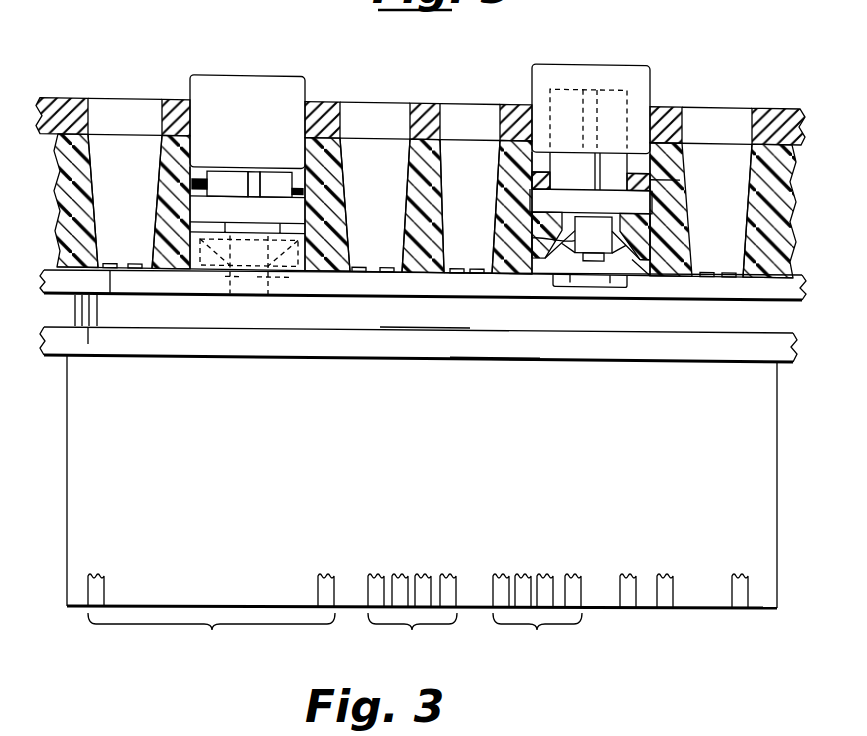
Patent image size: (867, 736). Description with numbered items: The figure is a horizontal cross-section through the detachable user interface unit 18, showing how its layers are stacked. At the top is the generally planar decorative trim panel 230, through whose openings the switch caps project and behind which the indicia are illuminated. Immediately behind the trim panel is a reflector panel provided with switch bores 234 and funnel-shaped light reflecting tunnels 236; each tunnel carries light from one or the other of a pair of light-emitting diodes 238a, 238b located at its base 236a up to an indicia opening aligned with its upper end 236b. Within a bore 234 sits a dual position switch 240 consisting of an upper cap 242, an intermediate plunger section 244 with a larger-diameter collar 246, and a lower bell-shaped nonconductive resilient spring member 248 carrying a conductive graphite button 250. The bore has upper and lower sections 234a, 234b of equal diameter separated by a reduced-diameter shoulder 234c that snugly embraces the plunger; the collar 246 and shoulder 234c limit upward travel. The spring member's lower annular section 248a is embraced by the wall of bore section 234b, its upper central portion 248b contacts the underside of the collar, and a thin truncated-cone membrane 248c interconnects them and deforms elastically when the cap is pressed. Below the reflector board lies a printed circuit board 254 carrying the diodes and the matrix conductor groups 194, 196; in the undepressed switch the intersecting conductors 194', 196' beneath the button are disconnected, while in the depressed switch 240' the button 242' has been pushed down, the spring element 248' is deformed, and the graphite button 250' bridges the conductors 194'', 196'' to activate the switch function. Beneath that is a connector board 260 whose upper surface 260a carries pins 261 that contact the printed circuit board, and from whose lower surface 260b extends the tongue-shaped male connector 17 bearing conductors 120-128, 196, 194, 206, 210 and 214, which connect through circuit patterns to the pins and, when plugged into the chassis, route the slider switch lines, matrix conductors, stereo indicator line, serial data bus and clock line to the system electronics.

The pluggable male connector 17 is at (447, 446).
The detachable user interface unit 18 is at (774, 88).
The slider switch output lines 120-128 is at (211, 618).
The matrix conductors 194 is at (537, 632).
The conductor group 194' is at (553, 339).
The conductor group 194'' is at (194, 326).
The matrix conductors 196 is at (420, 623).
The conductor group 196' is at (640, 340).
The conductor group 196'' is at (304, 332).
The stereo indicator line 206 is at (630, 612).
The serial data bus 210 is at (667, 612).
The clock line 214 is at (742, 612).
The decorative trim panel 230 is at (53, 96).
The switch bore 234 is at (337, 185).
The upper bore section 234a is at (663, 160).
The lower bore section 234b is at (642, 225).
The shoulder 234c is at (637, 181).
The light reflecting tunnel 236 is at (118, 175).
The tunnel base 236a is at (493, 277).
The tunnel upper end 236b is at (462, 140).
The light-emitting diode 238a is at (118, 299).
The light-emitting diode 238b is at (135, 255).
The dual position switch 240 is at (614, 141).
The dual position switch 240' is at (250, 146).
The upper cap 242 is at (591, 92).
The button 242' is at (247, 88).
The plunger section 244 is at (608, 165).
The collar 246 is at (580, 199).
The bell-shaped resilient spring member 248 is at (637, 237).
The spring element 248' is at (296, 226).
The lower annular section 248a is at (647, 269).
The upper central portion 248b is at (590, 203).
The elastically deformable membrane 248c is at (660, 269).
The conductive graphite button 250 is at (518, 242).
The graphite button 250' is at (249, 206).
The printed circuit board 254 is at (352, 283).
The connector board 260 is at (133, 345).
The connector board upper surface 260a is at (430, 323).
The connector board lower surface 260b is at (497, 360).
The pins 261 is at (88, 328).